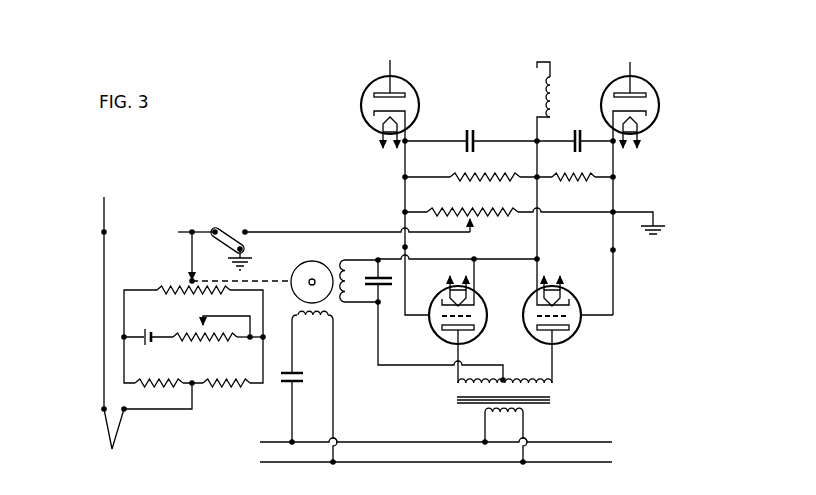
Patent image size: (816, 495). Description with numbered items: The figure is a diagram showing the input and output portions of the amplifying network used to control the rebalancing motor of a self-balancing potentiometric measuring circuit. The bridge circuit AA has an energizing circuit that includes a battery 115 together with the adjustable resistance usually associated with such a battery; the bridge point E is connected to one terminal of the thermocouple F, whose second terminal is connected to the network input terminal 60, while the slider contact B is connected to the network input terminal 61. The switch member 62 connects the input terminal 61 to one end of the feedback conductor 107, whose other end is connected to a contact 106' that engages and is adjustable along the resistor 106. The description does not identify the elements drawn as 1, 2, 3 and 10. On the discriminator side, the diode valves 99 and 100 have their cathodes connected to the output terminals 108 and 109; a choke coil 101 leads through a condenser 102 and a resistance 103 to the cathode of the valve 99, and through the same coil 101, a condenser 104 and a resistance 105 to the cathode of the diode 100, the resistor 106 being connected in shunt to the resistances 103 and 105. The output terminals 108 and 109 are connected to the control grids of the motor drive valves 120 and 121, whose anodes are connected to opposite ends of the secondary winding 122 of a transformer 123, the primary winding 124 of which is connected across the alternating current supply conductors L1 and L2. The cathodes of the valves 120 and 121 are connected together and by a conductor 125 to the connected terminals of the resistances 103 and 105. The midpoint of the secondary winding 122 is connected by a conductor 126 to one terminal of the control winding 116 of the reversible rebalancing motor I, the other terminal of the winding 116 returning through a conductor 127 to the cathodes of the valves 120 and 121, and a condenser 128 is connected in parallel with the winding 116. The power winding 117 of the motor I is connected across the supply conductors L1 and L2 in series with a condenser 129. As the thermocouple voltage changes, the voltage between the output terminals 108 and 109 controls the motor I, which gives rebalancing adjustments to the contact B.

The conductor 10 is at (104, 222).
The input terminal 60 is at (101, 232).
The bridge circuit AA is at (148, 274).
The input terminal 61 is at (178, 232).
The switch member 62 is at (238, 230).
The slider contact B is at (191, 279).
The resistance arm 1 is at (221, 291).
The battery 115 is at (149, 331).
The bridge point E is at (190, 378).
The resistance arm 2 is at (153, 388).
The resistance arm 3 is at (221, 388).
The thermocouple F is at (116, 440).
The reversible rebalancing motor I is at (302, 262).
The feedback conductor 107 is at (349, 231).
The output terminal 109 is at (402, 247).
The control winding 116 is at (346, 300).
The power winding 117 is at (297, 318).
The condenser 128 is at (383, 287).
The condenser 129 is at (295, 384).
The conductor 126 is at (393, 366).
The conductor 127 is at (449, 262).
The motor drive valve 121 is at (431, 340).
The motor drive valve 120 is at (580, 332).
The secondary winding 122 is at (510, 381).
The transformer 123 is at (562, 400).
The primary winding 124 is at (491, 417).
The alternating current supply conductor L1 is at (612, 442).
The alternating current supply conductor L2 is at (612, 462).
The diode valve 100 is at (360, 102).
The condenser 104 is at (472, 130).
The choke coil 101 is at (554, 90).
The condenser 102 is at (584, 128).
The diode valve 99 is at (658, 109).
The resistance 105 is at (497, 176).
The resistance 103 is at (578, 176).
The resistor 106 is at (533, 209).
The contact 106' is at (499, 233).
The conductor 125 is at (539, 248).
The output terminal 108 is at (615, 250).